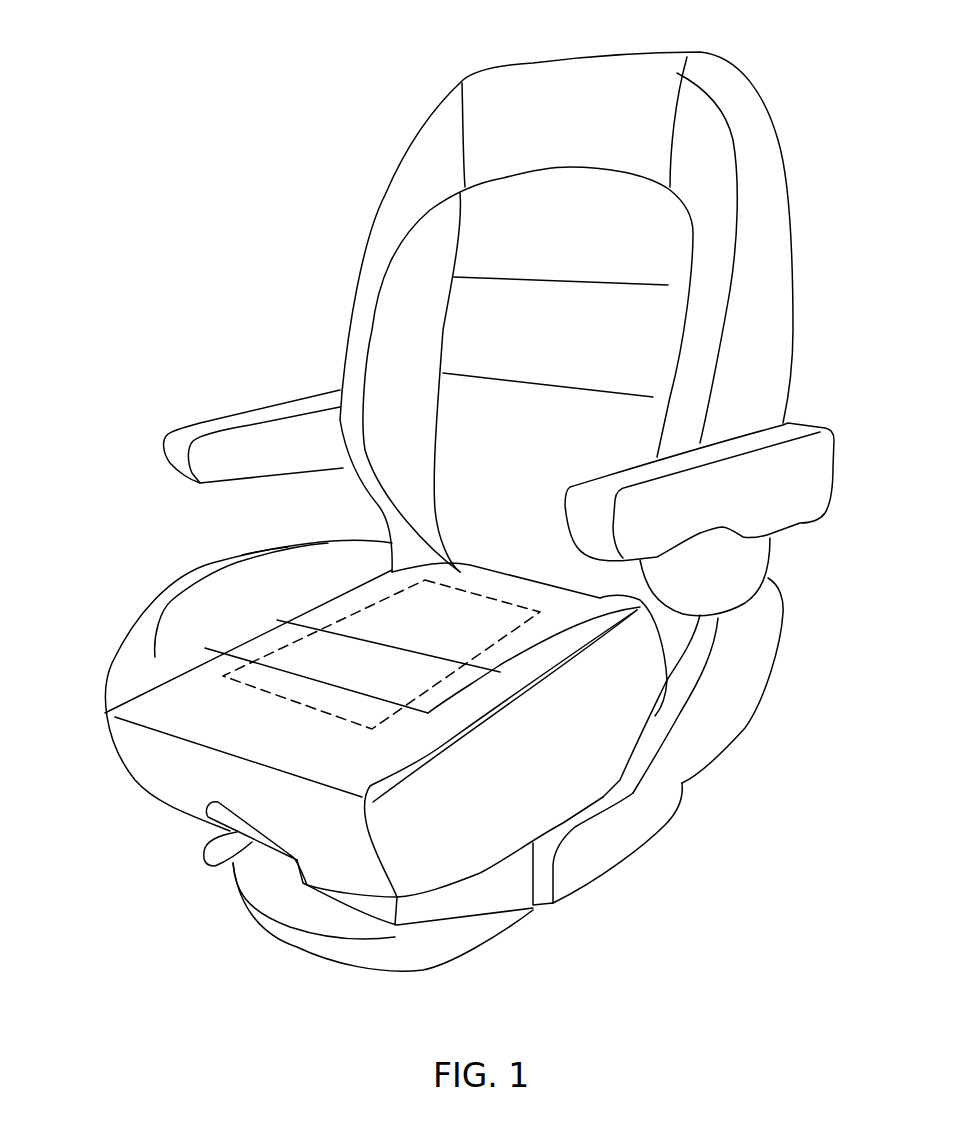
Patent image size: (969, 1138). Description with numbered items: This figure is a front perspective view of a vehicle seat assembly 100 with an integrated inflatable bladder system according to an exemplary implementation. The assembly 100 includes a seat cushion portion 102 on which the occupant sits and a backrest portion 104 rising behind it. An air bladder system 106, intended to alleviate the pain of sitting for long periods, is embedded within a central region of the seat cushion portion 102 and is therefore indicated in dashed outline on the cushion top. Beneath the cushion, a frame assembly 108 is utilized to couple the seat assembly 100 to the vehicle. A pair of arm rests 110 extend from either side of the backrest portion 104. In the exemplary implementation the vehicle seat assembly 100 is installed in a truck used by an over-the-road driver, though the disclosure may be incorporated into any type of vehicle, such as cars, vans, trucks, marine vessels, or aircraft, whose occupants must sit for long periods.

The vehicle seat assembly 100 is at (132, 123).
The seat cushion portion 102 is at (167, 760).
The backrest portion 104 is at (763, 243).
The air bladder system 106 is at (477, 640).
The frame assembly 108 is at (612, 843).
The arm rests 110 is at (255, 442).